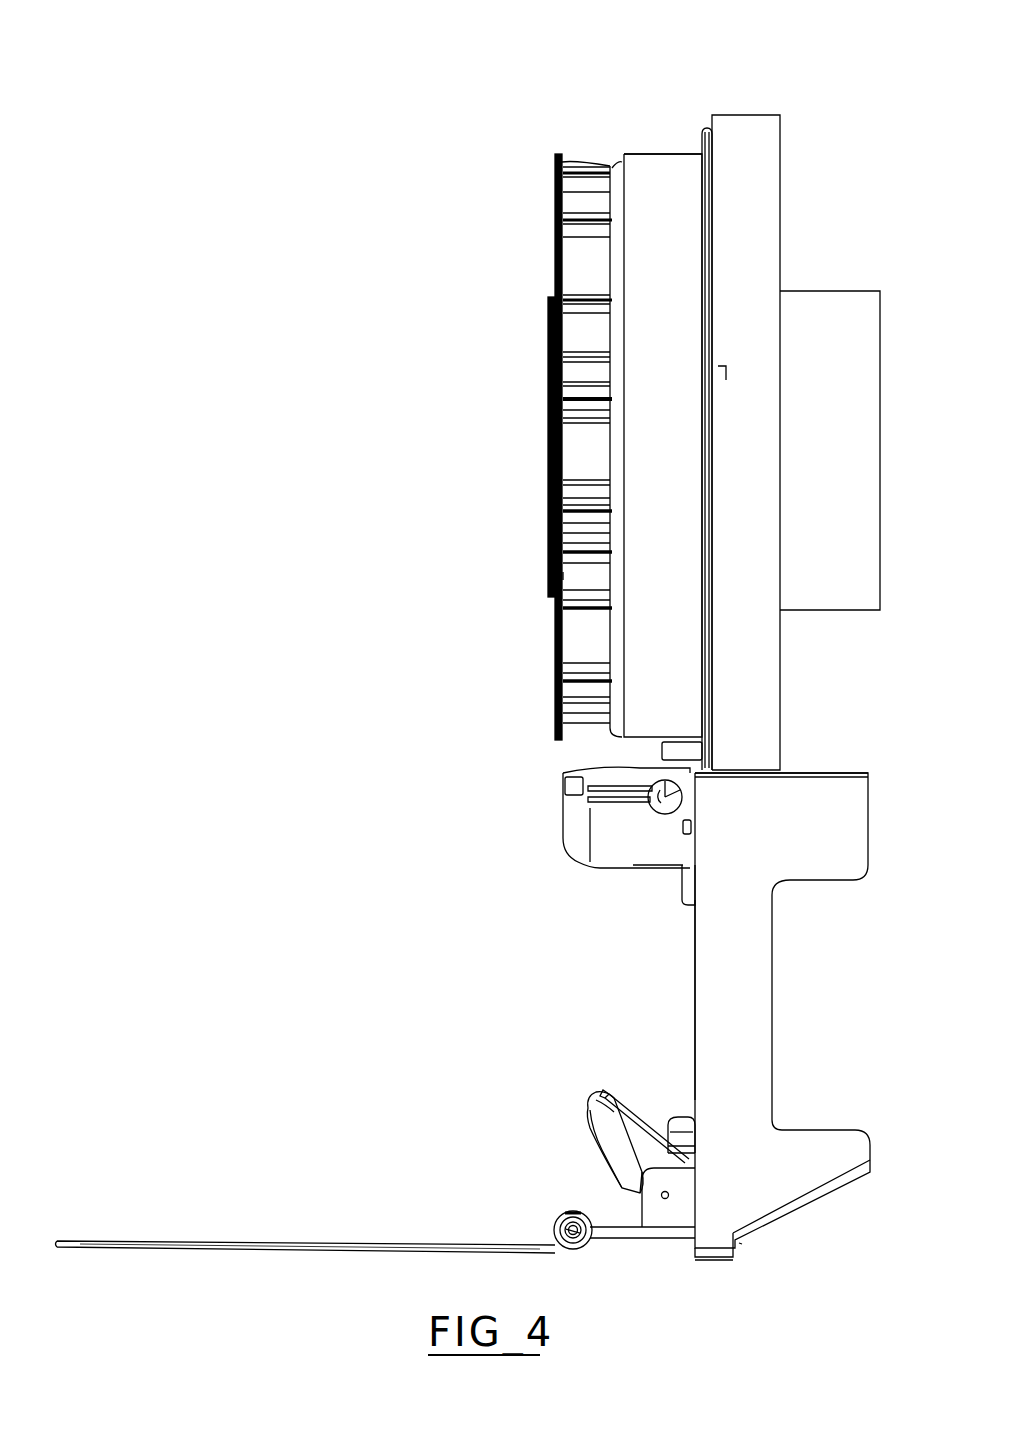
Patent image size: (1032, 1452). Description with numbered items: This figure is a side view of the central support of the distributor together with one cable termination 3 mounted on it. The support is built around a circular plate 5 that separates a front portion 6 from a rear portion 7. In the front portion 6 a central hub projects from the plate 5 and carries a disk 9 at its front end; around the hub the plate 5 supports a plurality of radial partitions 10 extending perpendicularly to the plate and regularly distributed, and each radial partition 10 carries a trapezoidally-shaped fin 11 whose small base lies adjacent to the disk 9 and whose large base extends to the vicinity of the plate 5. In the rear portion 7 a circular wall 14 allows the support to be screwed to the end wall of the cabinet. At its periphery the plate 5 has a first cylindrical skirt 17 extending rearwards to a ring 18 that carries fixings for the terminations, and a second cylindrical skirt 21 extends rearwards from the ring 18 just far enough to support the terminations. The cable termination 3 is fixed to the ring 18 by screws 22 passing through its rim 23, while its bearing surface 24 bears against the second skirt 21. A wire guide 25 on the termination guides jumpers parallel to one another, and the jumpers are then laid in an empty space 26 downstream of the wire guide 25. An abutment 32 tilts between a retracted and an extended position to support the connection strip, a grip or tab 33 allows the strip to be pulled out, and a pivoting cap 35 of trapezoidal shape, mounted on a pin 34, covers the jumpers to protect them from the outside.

The cable termination 3 is at (884, 988).
The circular plate 5 is at (614, 170).
The front portion 6 is at (622, 70).
The rear portion 7 is at (788, 54).
The disk 9 is at (583, 332).
The radial partition 10 is at (585, 195).
The trapezoidally-shaped fin 11 is at (555, 560).
The circular wall 14 is at (825, 316).
The first cylindrical skirt 17 is at (663, 170).
The ring 18 is at (699, 135).
The second cylindrical skirt 21 is at (755, 126).
The screws 22 is at (685, 750).
The rim 23 is at (590, 772).
The bearing surface 24 is at (752, 768).
The wire guide 25 is at (610, 828).
The empty space 26 is at (627, 1025).
The abutment 32 is at (600, 1115).
The grip or tab 33 is at (680, 1132).
The pin 34 is at (582, 1243).
The pivoting cap 35 is at (388, 1252).